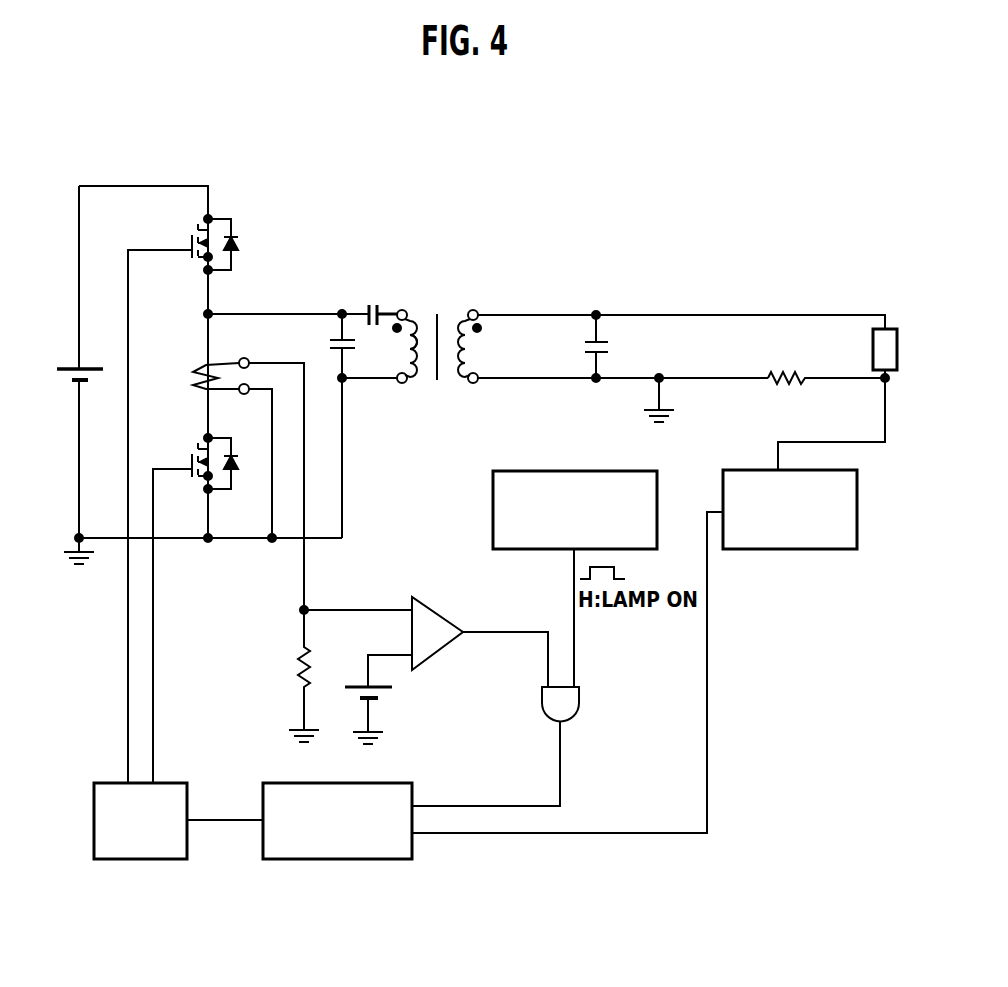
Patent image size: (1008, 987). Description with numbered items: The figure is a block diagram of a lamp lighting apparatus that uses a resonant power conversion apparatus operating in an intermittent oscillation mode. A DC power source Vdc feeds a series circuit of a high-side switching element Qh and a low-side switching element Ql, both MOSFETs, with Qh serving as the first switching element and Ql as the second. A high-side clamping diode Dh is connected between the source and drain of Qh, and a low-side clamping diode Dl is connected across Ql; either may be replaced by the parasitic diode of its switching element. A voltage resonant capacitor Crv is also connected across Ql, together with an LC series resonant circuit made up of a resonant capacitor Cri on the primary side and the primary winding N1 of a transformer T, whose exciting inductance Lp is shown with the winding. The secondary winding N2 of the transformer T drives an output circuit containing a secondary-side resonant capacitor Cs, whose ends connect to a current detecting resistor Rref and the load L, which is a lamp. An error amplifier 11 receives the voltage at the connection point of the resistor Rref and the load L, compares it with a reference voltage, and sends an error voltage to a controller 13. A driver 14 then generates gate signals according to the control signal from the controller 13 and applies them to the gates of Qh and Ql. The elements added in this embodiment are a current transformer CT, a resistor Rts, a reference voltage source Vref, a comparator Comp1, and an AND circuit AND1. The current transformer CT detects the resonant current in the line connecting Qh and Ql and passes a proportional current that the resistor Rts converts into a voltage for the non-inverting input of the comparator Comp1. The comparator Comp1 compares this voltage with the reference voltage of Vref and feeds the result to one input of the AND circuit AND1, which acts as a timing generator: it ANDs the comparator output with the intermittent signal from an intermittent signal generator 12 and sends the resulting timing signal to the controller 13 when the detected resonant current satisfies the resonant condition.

The error amplifier 11 is at (760, 552).
The intermittent signal generator 12 is at (577, 470).
The controller 13 is at (297, 862).
The driver 14 is at (134, 862).
The high-side switching element Qh is at (170, 499).
The low-side switching element Ql is at (182, 608).
The high-side clamping diode Dh is at (241, 244).
The low-side clamping diode Dl is at (240, 463).
The current transformer CT is at (233, 358).
The voltage resonant capacitor Crv is at (346, 424).
The resonant capacitor on the primary side Cri is at (377, 299).
The transformer T is at (437, 305).
The primary winding N1 is at (411, 333).
The secondary winding N2 is at (462, 333).
The exciting inductance Lp is at (401, 349).
The resonant capacitor on the secondary side Cs is at (613, 346).
The load L is at (885, 353).
The current detecting resistor Rref is at (825, 394).
The resistor Rts is at (289, 676).
The reference voltage source Vref is at (385, 699).
The DC power source Vdc is at (65, 388).
The comparator Comp1 is at (446, 612).
The AND circuit AND1 is at (568, 722).